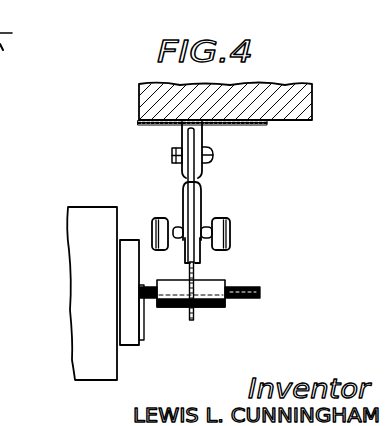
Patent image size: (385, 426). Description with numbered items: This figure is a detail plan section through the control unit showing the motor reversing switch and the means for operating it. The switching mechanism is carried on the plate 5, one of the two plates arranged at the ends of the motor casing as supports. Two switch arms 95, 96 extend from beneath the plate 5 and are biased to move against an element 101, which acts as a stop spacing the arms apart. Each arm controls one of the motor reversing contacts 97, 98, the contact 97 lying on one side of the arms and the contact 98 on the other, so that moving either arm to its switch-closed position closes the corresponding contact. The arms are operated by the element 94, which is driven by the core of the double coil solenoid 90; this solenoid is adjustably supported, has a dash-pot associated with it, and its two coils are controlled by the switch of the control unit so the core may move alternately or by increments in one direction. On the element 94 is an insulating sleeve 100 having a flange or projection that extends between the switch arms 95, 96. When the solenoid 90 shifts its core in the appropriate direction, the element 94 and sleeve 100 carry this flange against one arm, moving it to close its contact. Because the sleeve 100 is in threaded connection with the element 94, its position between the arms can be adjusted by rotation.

The plate 5 is at (312, 97).
The solenoid 90 is at (90, 372).
The element 94 is at (149, 304).
The switch arm 95 is at (183, 193).
The switch arm 96 is at (201, 193).
The motor reversing contact 97 is at (153, 226).
The motor reversing contact 98 is at (230, 233).
The insulating sleeve 100 is at (212, 308).
The stop element 101 is at (203, 176).